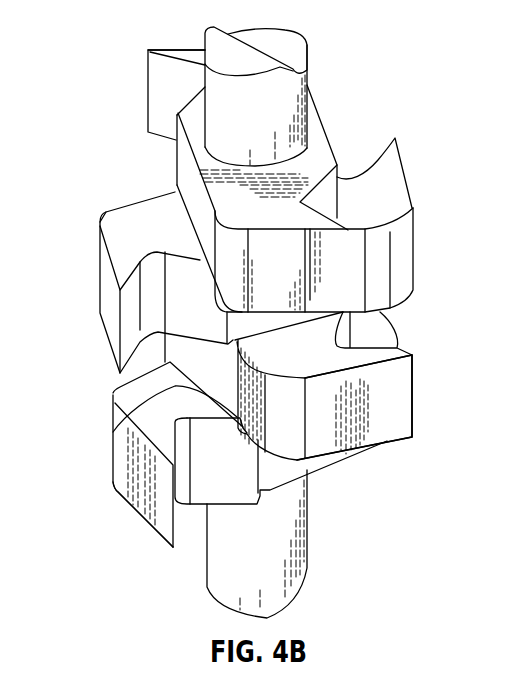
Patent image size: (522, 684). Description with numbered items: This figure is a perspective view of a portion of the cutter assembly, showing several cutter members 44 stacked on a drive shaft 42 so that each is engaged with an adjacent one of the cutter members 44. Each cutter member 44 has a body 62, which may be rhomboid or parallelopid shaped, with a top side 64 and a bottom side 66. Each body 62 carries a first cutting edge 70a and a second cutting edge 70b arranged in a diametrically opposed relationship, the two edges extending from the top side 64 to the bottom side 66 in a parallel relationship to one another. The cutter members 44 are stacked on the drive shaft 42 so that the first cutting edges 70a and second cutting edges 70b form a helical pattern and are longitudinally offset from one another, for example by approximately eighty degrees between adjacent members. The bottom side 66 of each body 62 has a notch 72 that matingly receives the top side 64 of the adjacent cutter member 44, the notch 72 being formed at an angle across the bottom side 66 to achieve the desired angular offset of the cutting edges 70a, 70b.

The drive shaft 42 is at (307, 528).
The cutter member 44 is at (178, 50).
The body 62 is at (312, 104).
The top side 64 is at (328, 138).
The bottom side 66 is at (372, 445).
The first cutting edge 70a is at (340, 177).
The second cutting edge 70b is at (148, 92).
The notch 72 is at (175, 207).